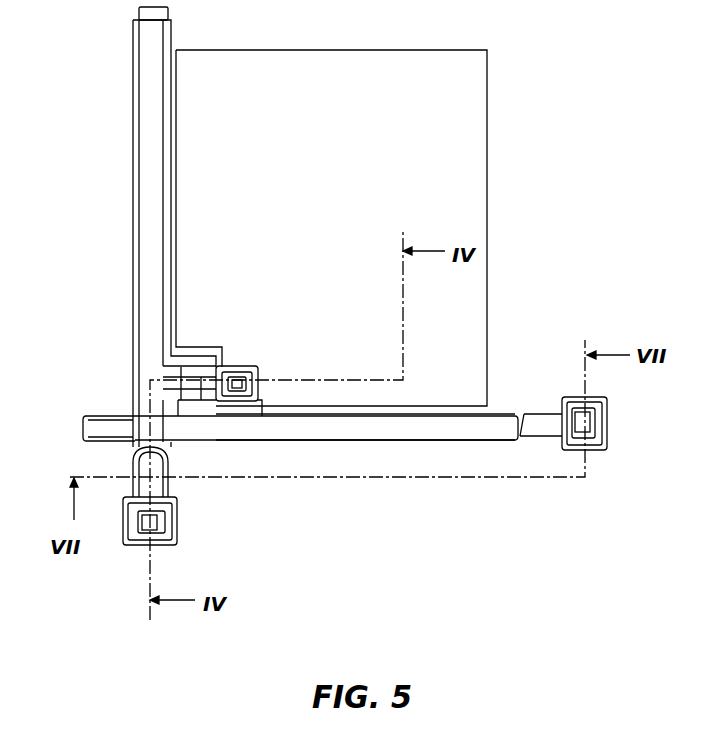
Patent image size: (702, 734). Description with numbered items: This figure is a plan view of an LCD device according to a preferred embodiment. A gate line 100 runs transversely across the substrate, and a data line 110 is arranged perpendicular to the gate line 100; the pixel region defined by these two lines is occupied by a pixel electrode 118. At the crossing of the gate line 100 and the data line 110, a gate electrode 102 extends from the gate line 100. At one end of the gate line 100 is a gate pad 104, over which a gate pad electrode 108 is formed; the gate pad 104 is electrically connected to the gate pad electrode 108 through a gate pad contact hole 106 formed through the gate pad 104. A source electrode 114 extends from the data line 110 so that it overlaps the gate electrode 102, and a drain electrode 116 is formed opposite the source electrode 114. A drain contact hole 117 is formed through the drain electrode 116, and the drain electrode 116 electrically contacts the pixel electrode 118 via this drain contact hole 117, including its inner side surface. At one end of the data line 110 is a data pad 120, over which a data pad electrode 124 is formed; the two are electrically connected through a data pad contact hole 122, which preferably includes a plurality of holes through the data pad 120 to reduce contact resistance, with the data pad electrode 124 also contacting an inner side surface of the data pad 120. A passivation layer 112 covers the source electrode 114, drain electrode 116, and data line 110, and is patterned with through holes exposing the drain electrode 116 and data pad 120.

The gate line 100 is at (400, 428).
The gate electrode 102 is at (200, 407).
The gate pad 104 is at (573, 398).
The gate pad contact hole 106 is at (583, 443).
The gate pad electrode 108 is at (607, 412).
The data line 110 is at (147, 86).
The passivation layer 112 is at (133, 150).
The source electrode 114 is at (170, 377).
The drain electrode 116 is at (247, 362).
The drain contact hole 117 is at (257, 364).
The pixel electrode 118 is at (477, 182).
The data pad 120 is at (155, 540).
The data pad contact hole 122 is at (163, 528).
The data pad electrode 124 is at (178, 512).